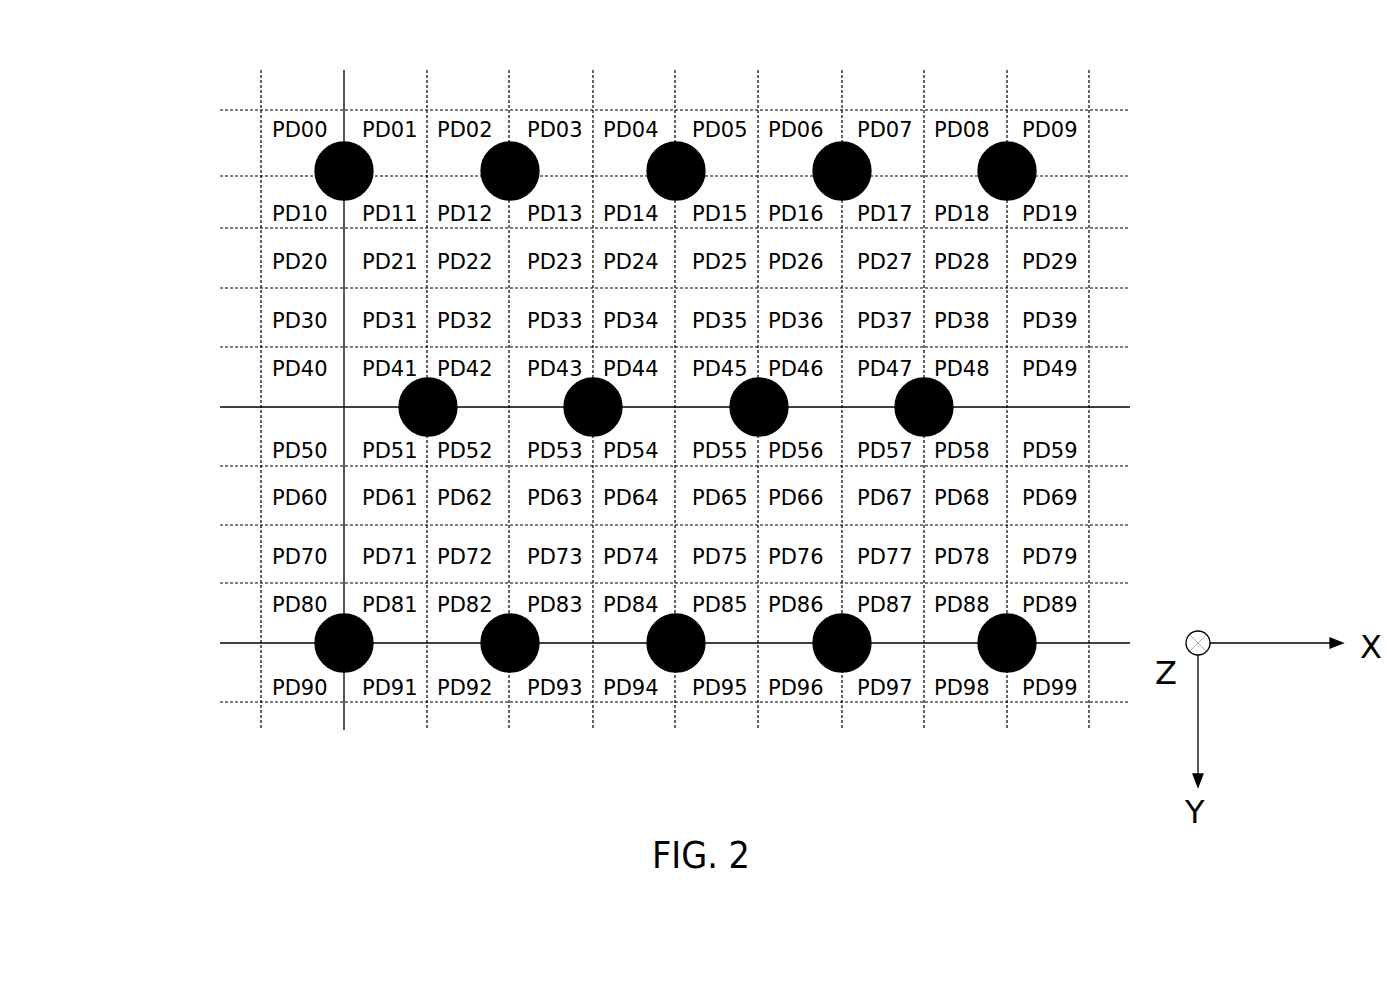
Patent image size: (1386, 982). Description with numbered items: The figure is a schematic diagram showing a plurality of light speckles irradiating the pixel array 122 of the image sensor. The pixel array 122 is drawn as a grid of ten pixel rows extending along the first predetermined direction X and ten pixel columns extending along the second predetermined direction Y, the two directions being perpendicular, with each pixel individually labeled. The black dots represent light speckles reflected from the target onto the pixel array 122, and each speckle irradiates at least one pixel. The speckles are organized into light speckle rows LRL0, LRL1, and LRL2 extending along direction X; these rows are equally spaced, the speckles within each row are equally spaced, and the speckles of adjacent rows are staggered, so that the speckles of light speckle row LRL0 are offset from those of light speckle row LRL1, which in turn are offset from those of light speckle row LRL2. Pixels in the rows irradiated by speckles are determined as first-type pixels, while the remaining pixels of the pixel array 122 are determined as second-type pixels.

The pixel array 122 is at (1150, 79).
The light speckle row LRL0 is at (208, 140).
The light speckle row LRL1 is at (208, 376).
The light speckle row LRL2 is at (208, 612).